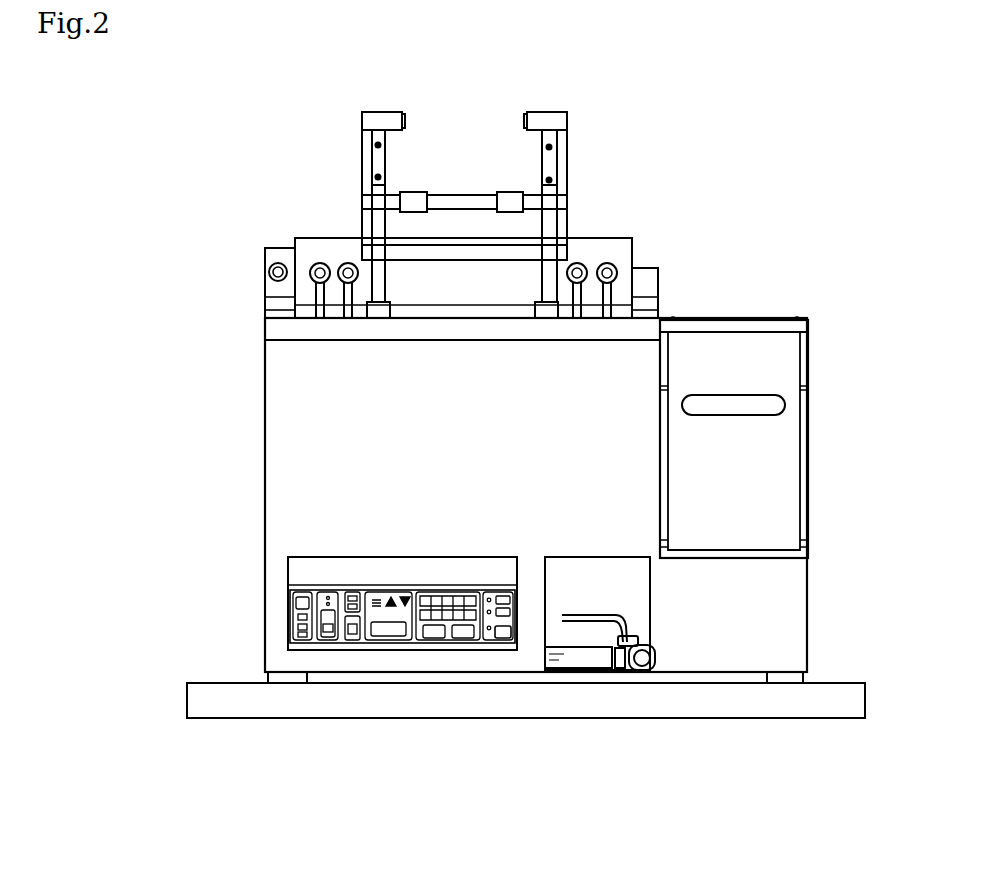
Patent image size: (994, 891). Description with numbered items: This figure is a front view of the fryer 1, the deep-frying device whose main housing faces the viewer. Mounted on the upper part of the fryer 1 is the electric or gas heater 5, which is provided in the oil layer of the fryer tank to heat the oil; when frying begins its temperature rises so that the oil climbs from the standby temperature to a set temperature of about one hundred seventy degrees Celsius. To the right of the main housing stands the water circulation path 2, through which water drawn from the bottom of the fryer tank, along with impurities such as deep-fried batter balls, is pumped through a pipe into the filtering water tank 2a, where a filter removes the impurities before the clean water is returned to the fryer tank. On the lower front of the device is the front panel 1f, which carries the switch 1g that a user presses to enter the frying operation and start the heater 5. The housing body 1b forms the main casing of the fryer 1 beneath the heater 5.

The fryer 1 is at (753, 212).
The housing body 1b is at (279, 397).
The front panel 1f is at (288, 590).
The switch 1g is at (497, 640).
The water circulation path 2 is at (757, 321).
The filtering water tank 2a is at (777, 377).
The heater 5 is at (320, 291).